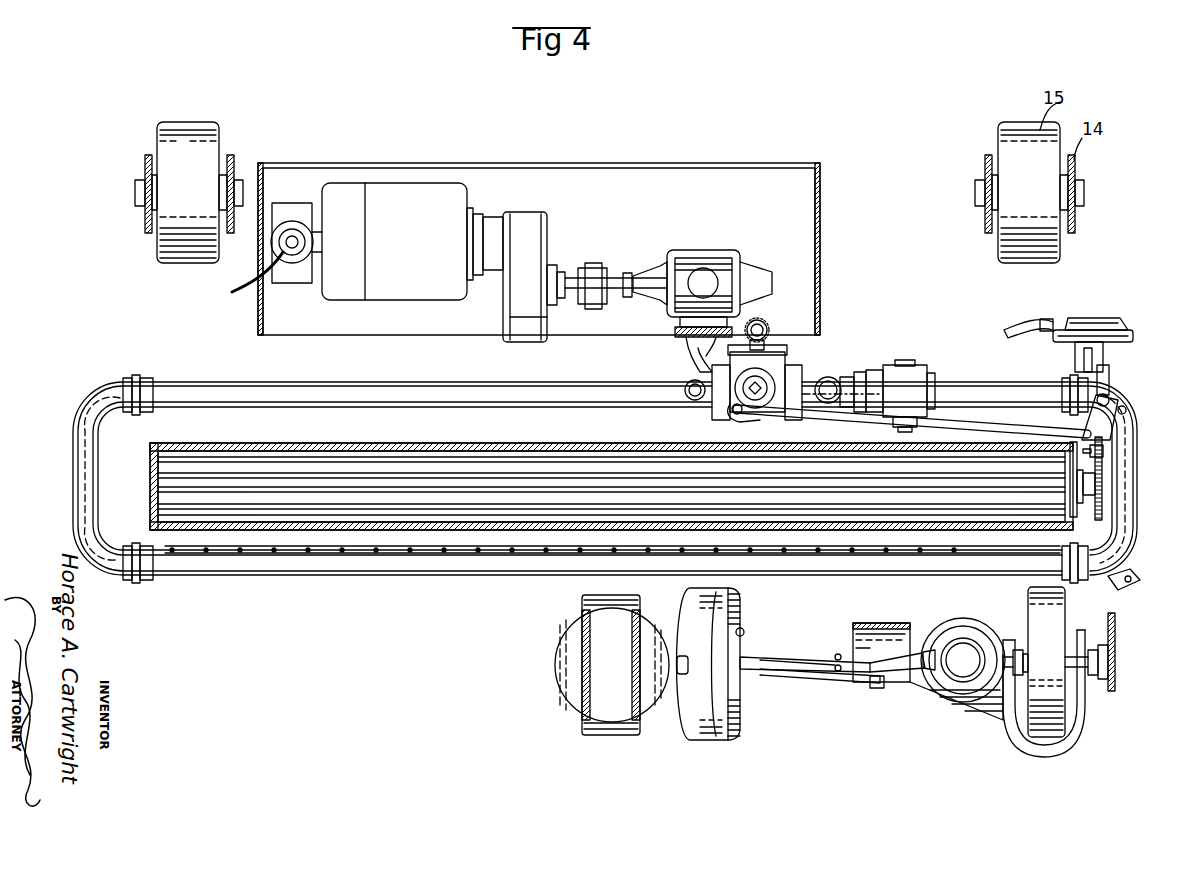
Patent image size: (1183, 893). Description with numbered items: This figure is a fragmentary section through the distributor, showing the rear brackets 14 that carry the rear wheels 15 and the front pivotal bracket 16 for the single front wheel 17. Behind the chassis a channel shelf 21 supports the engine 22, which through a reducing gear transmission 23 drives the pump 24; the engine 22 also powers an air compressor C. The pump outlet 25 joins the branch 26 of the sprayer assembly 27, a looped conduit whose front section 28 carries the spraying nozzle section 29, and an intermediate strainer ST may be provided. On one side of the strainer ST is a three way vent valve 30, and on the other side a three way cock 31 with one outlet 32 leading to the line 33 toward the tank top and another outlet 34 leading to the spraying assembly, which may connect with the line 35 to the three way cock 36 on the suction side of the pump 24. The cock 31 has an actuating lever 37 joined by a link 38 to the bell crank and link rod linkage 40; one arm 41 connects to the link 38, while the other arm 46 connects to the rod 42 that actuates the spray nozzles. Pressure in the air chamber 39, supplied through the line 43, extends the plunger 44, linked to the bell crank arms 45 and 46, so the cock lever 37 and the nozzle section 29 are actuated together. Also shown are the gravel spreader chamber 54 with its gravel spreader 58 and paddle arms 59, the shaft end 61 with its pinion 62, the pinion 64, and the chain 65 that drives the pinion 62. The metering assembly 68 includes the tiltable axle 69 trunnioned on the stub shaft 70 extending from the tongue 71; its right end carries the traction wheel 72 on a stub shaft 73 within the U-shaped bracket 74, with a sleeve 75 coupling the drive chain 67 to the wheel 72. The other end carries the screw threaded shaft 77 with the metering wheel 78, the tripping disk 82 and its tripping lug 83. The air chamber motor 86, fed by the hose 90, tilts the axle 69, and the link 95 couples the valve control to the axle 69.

The rear bracket 14 is at (145, 163).
The rear wheel 15 is at (178, 130).
The front pivotal bracket 16 is at (560, 655).
The front wheel 17 is at (600, 736).
The shelf 21 is at (600, 166).
The engine 22 is at (412, 242).
The reducing gear transmission 23 is at (525, 228).
The pump 24 is at (714, 250).
The pump outlet 25 is at (690, 348).
The branch 26 is at (815, 380).
The sprayer assembly 27 is at (103, 380).
The front section 28 is at (282, 575).
The spraying nozzle section 29 is at (165, 548).
The three way vent valve 30 is at (905, 380).
The three way cock 31 is at (787, 368).
The outlet 32 is at (758, 320).
The line 33 is at (762, 322).
The outlet 34 is at (737, 402).
The line 35 is at (694, 392).
The three way cock 36 is at (680, 302).
The actuating lever 37 is at (742, 414).
The link 38 is at (972, 428).
The air chamber 39 is at (1092, 318).
The bell crank and link rod linkage 40 is at (1133, 566).
The bell crank arm 41 is at (1086, 418).
The rod 42 is at (812, 546).
The line 43 is at (1004, 330).
The plunger 44 is at (1109, 372).
The bell crank arm 45 is at (1122, 408).
The bell crank arm 46 is at (1118, 582).
The gravel spreader chamber 54 is at (286, 444).
The gravel spreader 58 is at (178, 482).
The paddle arms 59 is at (388, 490).
The shaft end 61 is at (1084, 495).
The pinion 62 is at (1095, 484).
The pinion 64 is at (1103, 450).
The chain 65 is at (1102, 464).
The drive chain 67 is at (1116, 626).
The metering assembly 68 is at (852, 700).
The tiltable axle 69 is at (813, 672).
The stub shaft 70 is at (874, 690).
The tongue 71 is at (878, 625).
The traction wheel 72 is at (1055, 725).
The stub shaft 73 is at (1020, 650).
The U-shaped bracket 74 is at (1012, 746).
The sleeve 75 is at (1096, 648).
The screw threaded shaft 77 is at (758, 657).
The metering wheel 78 is at (708, 738).
The tripping disk 82 is at (739, 700).
The tripping lug 83 is at (741, 628).
The air chamber motor 86 is at (955, 645).
The hose 90 is at (897, 656).
The link 95 is at (838, 656).
The air compressor C is at (292, 210).
The opening O is at (702, 268).
The strainer ST is at (848, 378).